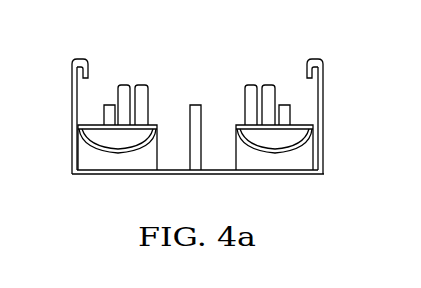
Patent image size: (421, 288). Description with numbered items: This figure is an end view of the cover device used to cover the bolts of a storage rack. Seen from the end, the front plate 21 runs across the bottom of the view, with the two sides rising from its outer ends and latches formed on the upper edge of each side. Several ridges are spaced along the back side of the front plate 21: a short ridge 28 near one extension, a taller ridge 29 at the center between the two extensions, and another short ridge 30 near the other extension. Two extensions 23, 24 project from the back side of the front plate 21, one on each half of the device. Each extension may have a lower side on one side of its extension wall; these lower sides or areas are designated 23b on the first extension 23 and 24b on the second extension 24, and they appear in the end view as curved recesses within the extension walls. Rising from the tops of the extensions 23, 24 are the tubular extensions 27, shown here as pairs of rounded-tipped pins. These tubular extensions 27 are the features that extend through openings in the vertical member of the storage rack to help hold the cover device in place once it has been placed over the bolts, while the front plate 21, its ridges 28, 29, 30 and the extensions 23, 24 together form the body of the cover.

The front plate 21 is at (182, 175).
The extension 23 is at (92, 160).
The lower side of extension 23b is at (122, 153).
The extension 24 is at (307, 167).
The lower side of extension 24b is at (280, 153).
The tubular extensions 27 is at (143, 84).
The ridge 28 is at (110, 104).
The ridge 29 is at (195, 105).
The ridge 30 is at (285, 104).